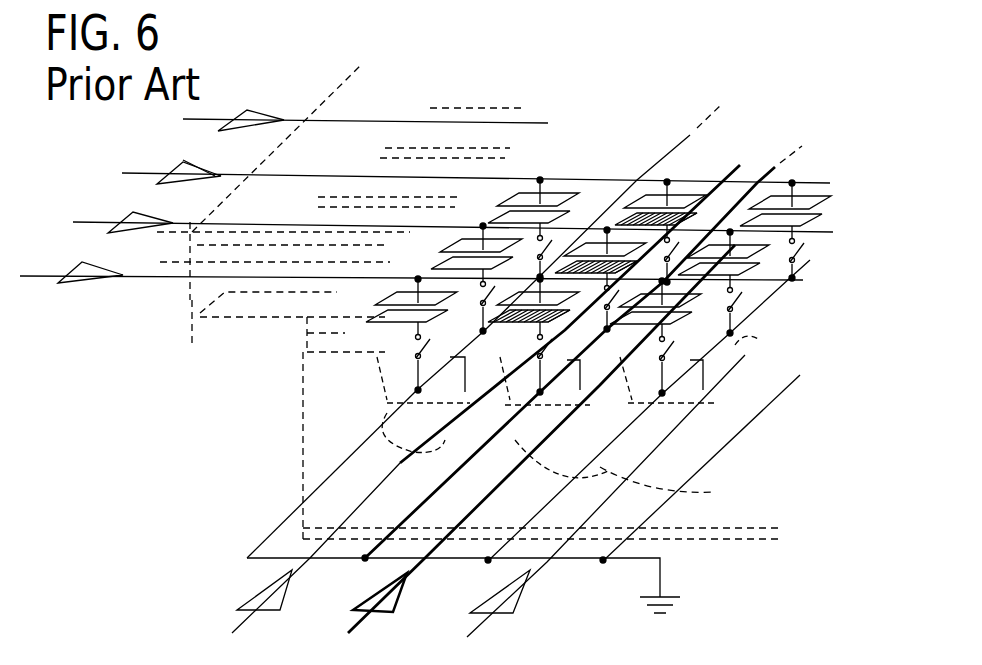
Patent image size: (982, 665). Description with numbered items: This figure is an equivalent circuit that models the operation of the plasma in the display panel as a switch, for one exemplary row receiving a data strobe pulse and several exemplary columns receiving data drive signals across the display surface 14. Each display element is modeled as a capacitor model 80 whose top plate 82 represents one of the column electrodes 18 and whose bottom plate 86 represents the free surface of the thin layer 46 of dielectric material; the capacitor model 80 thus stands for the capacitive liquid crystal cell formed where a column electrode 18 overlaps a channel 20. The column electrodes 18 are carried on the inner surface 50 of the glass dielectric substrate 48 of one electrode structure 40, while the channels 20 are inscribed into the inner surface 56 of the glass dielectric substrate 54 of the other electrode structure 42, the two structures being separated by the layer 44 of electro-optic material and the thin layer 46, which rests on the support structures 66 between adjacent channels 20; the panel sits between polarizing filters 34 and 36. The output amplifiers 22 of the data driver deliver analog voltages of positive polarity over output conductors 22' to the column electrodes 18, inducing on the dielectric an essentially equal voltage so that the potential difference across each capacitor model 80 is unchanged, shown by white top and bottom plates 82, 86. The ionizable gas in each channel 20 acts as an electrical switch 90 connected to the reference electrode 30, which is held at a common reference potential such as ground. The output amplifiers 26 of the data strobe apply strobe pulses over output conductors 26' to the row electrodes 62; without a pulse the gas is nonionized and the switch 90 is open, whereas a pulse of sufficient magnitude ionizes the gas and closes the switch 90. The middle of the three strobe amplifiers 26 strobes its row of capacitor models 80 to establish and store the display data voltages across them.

The display surface 14 is at (350, 99).
The column electrodes 18 is at (430, 108).
The channels 20 is at (546, 422).
The output amplifiers 22 is at (426, 205).
The output conductors 22' is at (182, 233).
The output amplifiers 26 is at (469, 401).
The output conductors 26' is at (381, 590).
The reference electrode 30 is at (387, 408).
The light polarizing filter 34 is at (322, 527).
The light polarizing filter 36 is at (190, 233).
The electrode structure 40 is at (190, 314).
The electrode structure 42 is at (303, 406).
The layer of electro-optic material 44 is at (300, 333).
The thin layer of dielectric material 46 is at (303, 345).
The glass dielectric substrate 48 is at (190, 262).
The inner surface 50 is at (248, 348).
The glass dielectric substrate 54 is at (303, 496).
The inner surface 56 is at (740, 352).
The row electrodes 62 is at (335, 459).
The support structures 66 is at (470, 392).
The capacitor model 80 is at (517, 196).
The top plate 82 is at (537, 180).
The bottom plate 86 is at (575, 203).
The electrical switch 90 is at (505, 227).